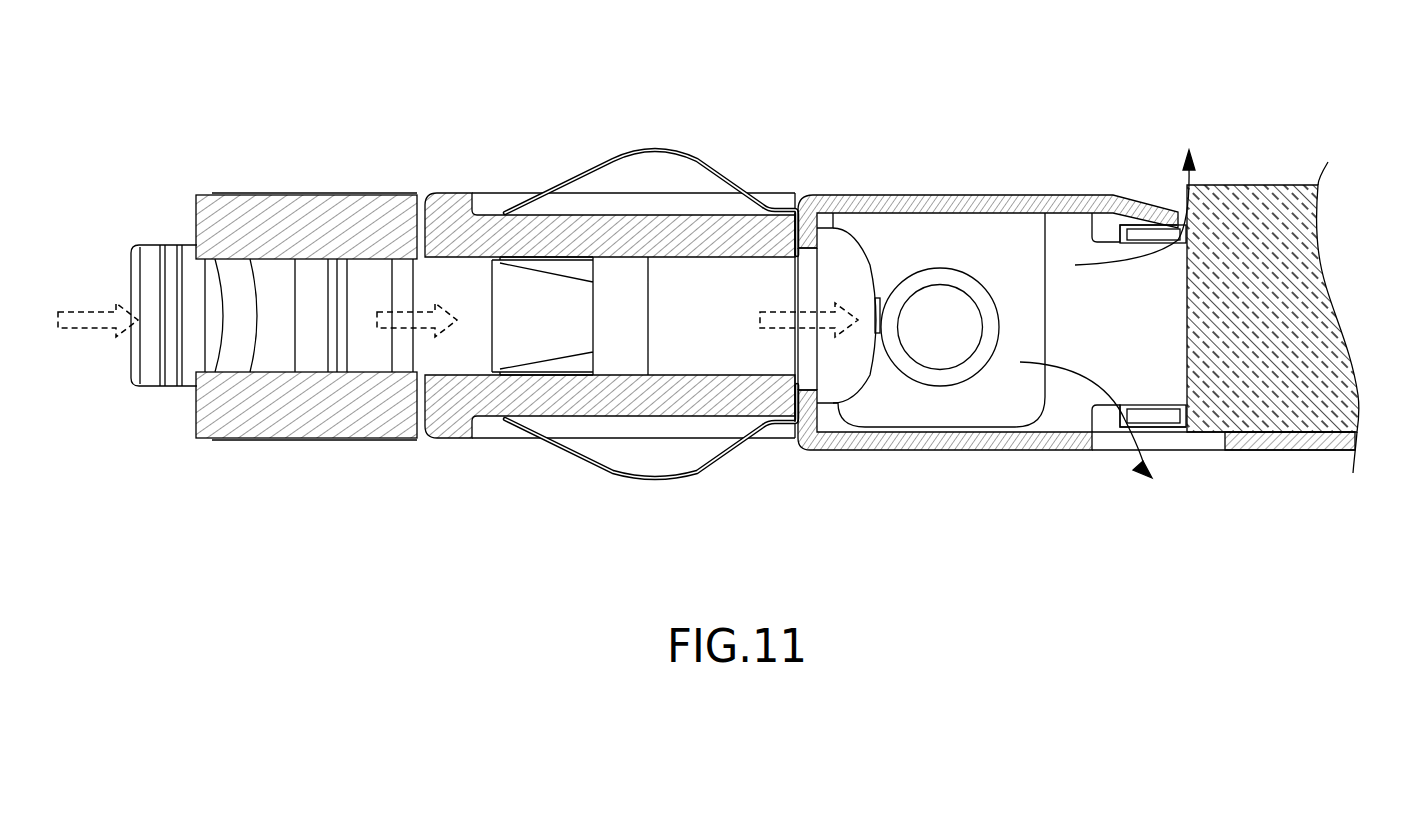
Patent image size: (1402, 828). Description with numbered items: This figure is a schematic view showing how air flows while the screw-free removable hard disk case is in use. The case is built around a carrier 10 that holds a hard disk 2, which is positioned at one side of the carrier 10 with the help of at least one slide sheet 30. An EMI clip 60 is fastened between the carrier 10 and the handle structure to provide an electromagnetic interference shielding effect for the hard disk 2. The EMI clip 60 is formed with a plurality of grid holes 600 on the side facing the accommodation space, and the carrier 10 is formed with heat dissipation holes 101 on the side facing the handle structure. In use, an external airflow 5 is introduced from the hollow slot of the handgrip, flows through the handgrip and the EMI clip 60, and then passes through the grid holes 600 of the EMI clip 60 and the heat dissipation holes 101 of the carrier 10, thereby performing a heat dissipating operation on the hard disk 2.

The hard disk 2 is at (1252, 228).
The external airflow 5 is at (80, 328).
The carrier 10 is at (1051, 191).
The slide sheet 30 is at (200, 191).
The EMI clip 60 is at (655, 152).
The heat dissipation holes 101 is at (808, 288).
The grid holes 600 is at (797, 271).